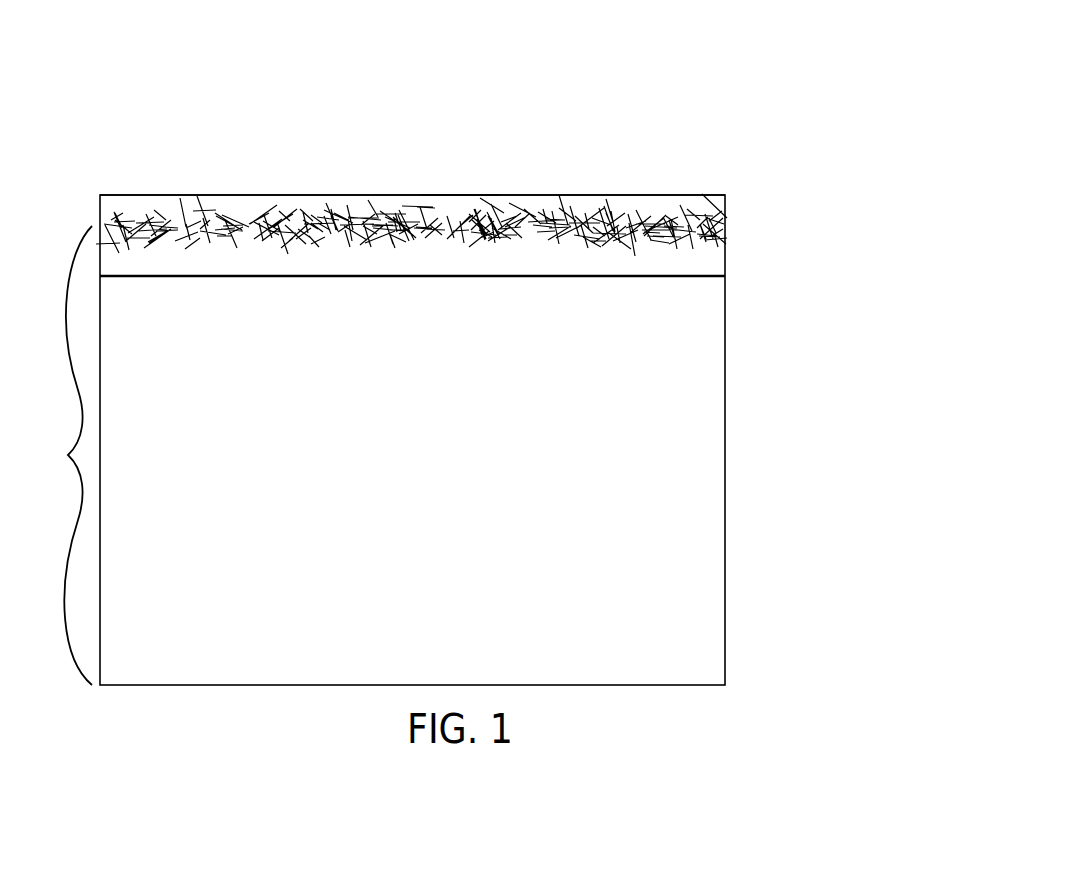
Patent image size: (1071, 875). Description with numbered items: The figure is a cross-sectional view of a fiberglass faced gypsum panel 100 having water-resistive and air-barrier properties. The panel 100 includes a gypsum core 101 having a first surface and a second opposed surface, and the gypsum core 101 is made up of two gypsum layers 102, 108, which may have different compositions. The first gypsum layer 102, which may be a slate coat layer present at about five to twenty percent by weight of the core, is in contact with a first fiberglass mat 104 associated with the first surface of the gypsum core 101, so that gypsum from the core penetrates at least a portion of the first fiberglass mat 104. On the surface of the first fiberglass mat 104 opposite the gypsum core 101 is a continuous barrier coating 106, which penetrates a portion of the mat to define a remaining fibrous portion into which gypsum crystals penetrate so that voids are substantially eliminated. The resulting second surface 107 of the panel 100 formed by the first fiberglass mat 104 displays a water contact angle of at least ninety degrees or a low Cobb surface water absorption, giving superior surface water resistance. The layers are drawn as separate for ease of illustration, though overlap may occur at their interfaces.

The gypsum panel 100 is at (462, 100).
The gypsum core 101 is at (48, 455).
The first gypsum layer 102 is at (717, 264).
The first fiberglass mat 104 is at (727, 222).
The continuous barrier coating 106 is at (722, 196).
The second surface 107 is at (457, 195).
The gypsum layer 108 is at (707, 460).